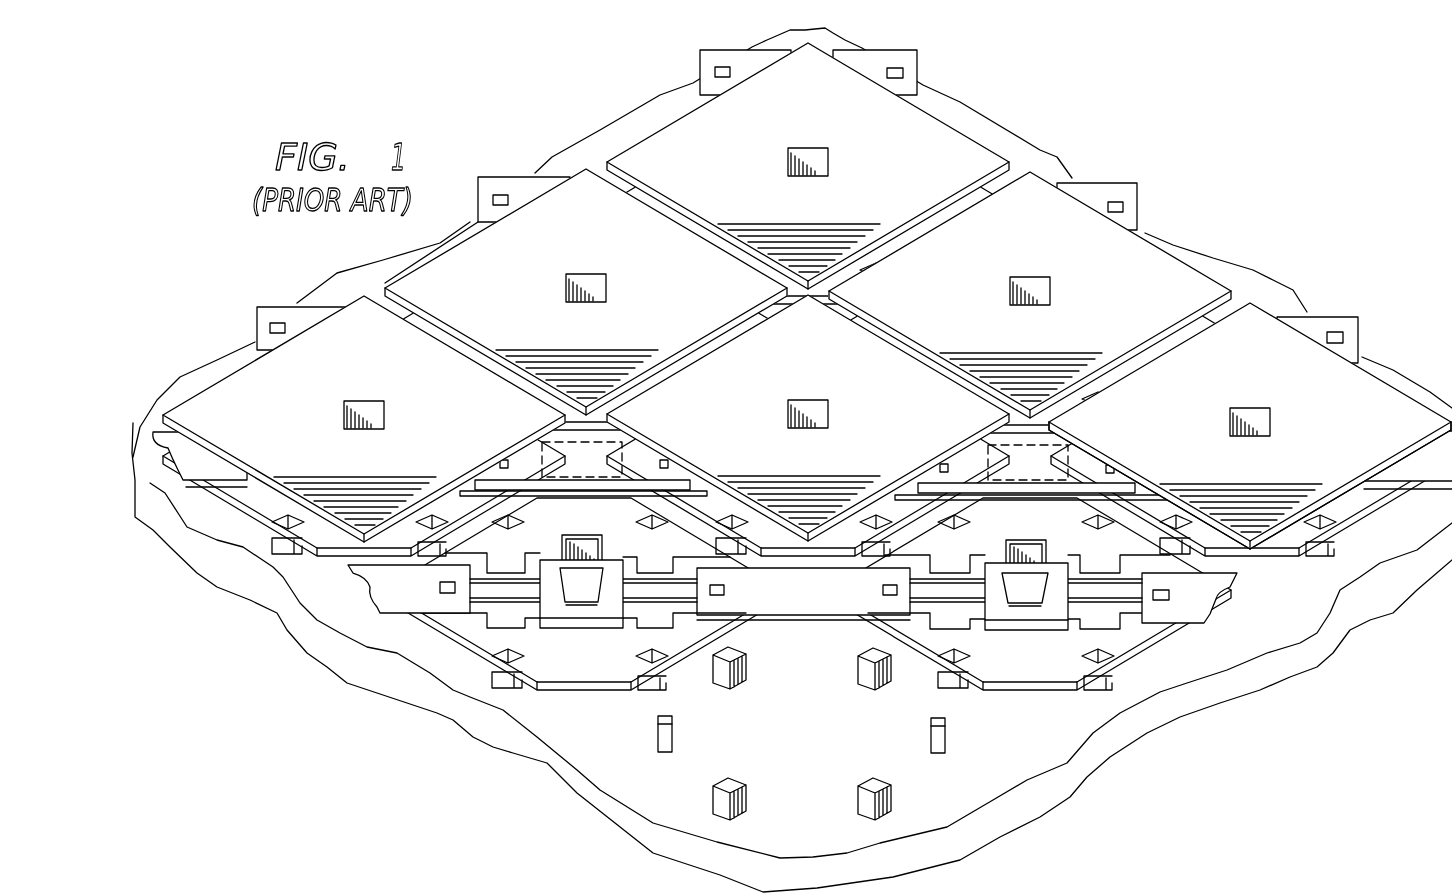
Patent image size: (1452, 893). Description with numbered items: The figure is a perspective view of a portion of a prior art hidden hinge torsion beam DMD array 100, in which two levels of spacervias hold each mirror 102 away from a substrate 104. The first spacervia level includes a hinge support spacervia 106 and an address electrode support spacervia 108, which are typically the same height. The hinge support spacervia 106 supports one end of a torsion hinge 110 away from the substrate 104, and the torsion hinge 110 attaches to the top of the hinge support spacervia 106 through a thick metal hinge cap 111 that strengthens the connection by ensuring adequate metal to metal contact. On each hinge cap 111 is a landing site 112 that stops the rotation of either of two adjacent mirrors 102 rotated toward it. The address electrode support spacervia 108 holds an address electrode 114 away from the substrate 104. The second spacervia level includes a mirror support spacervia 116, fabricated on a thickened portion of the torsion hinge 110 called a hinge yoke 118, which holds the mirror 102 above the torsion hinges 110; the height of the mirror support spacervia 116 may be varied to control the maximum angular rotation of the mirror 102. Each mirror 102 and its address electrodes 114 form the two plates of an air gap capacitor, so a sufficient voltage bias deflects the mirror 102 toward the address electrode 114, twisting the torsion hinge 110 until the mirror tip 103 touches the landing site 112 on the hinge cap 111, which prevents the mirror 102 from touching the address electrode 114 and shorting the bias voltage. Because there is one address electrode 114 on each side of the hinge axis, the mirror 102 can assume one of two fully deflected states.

The hidden hinge torsion beam DMD array 100 is at (792, 460).
The mirror 102 is at (828, 107).
The mirror tip 103 is at (1247, 524).
The substrate 104 is at (1125, 737).
The hinge support spacervia 106 is at (727, 589).
The address electrode support spacervia 108 is at (663, 672).
The torsion hinge 110 is at (483, 590).
The hinge cap 111 is at (278, 312).
The landing site 112 is at (558, 453).
The address electrode 114 is at (606, 528).
The mirror support spacervia 116 is at (575, 597).
The hinge yoke 118 is at (600, 612).